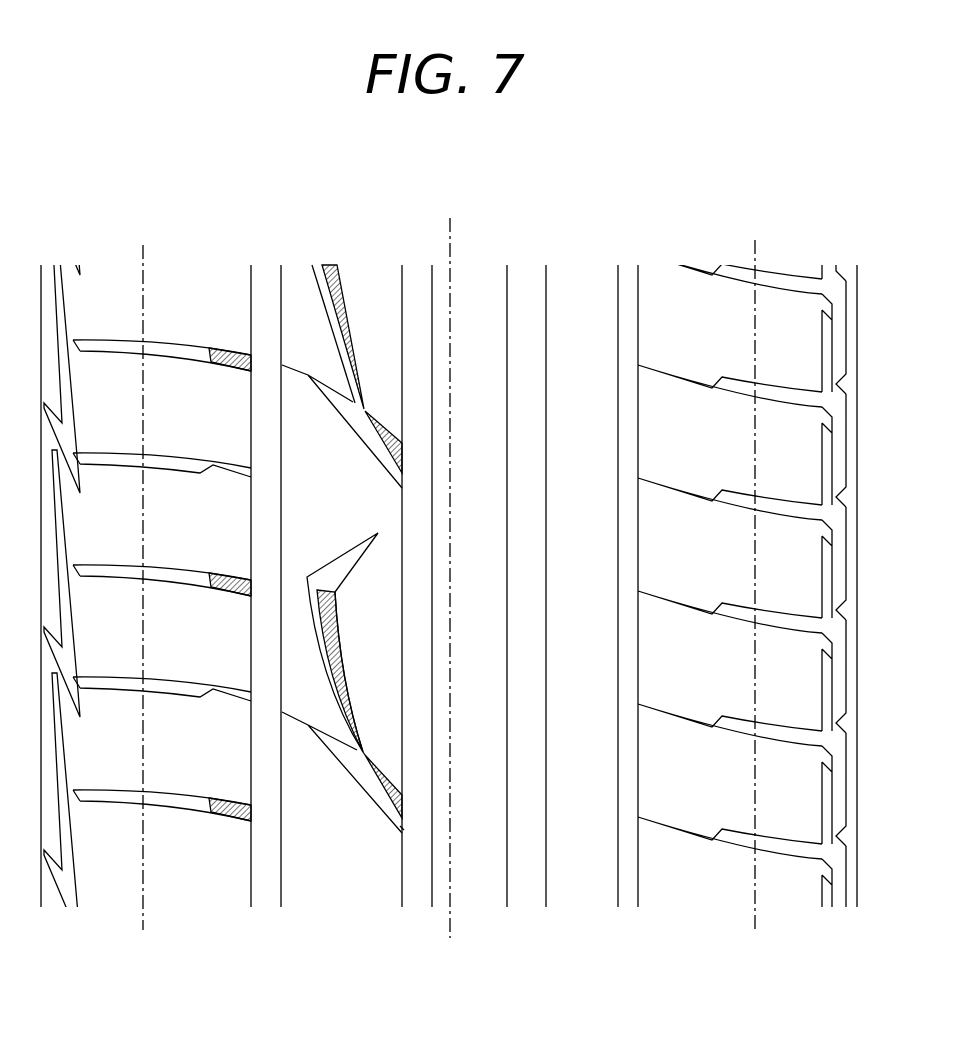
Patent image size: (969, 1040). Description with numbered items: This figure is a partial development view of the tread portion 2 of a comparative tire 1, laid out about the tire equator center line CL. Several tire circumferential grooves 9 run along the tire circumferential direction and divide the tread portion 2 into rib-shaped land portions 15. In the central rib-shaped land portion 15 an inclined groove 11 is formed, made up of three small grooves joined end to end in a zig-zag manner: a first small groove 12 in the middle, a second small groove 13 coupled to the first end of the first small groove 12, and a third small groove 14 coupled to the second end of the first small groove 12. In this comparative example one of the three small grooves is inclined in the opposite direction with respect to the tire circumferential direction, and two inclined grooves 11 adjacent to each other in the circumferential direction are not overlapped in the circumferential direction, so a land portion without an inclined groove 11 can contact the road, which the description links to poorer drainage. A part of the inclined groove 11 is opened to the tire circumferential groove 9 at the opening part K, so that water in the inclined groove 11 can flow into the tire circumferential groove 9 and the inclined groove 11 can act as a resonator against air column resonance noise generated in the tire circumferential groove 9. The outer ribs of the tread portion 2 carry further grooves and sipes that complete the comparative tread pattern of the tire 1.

The tire 1 is at (802, 204).
The tread portion 2 is at (710, 243).
The tire circumferential groove 9 is at (265, 282).
The inclined groove 11 is at (358, 416).
The first small groove 12 is at (343, 657).
The second small groove 13 is at (335, 570).
The third small groove 14 is at (365, 770).
The rib-shaped land portion 15 is at (314, 875).
The opening part K is at (402, 826).
The tire equator center line CL is at (449, 564).